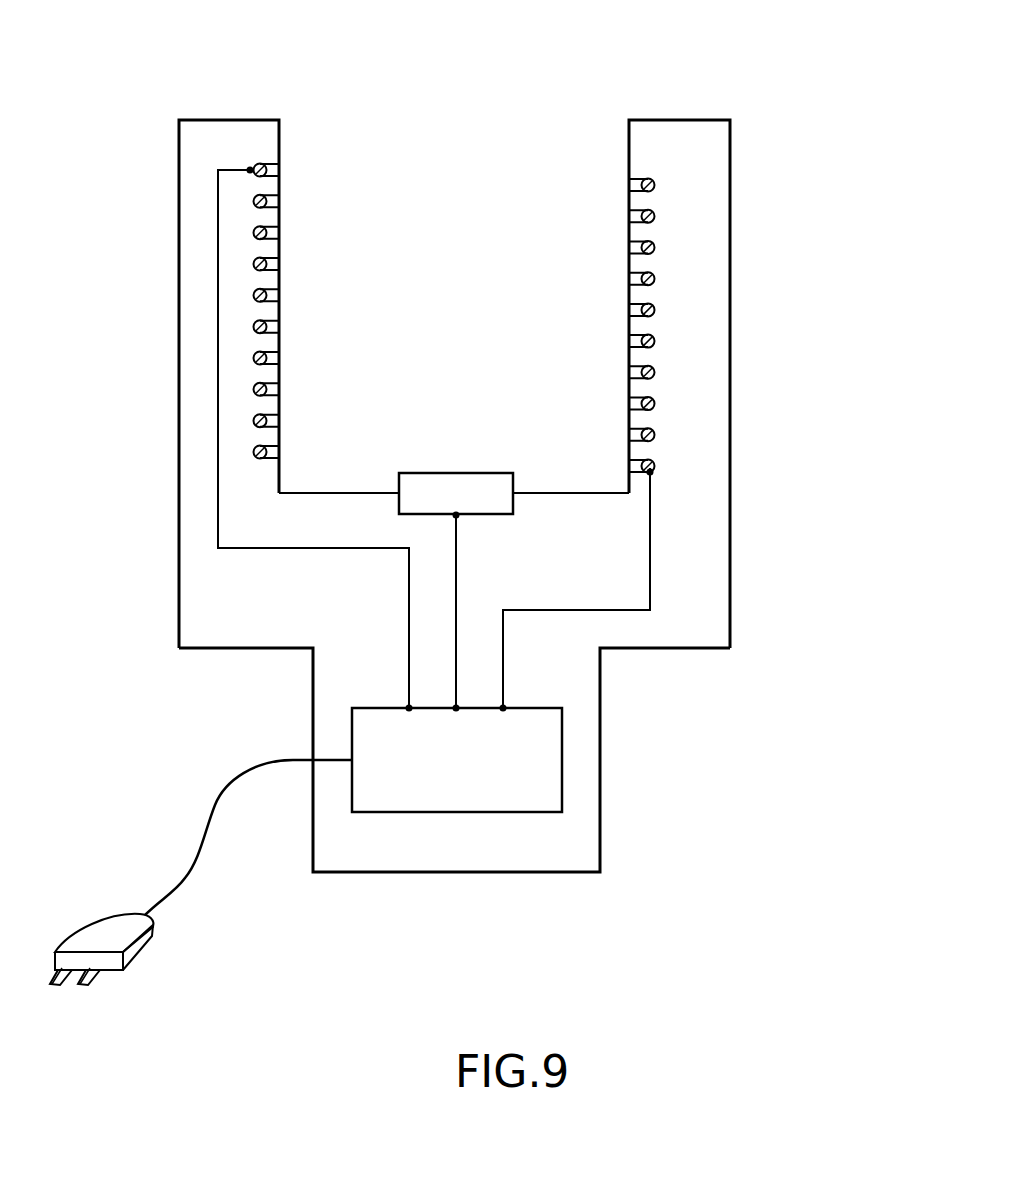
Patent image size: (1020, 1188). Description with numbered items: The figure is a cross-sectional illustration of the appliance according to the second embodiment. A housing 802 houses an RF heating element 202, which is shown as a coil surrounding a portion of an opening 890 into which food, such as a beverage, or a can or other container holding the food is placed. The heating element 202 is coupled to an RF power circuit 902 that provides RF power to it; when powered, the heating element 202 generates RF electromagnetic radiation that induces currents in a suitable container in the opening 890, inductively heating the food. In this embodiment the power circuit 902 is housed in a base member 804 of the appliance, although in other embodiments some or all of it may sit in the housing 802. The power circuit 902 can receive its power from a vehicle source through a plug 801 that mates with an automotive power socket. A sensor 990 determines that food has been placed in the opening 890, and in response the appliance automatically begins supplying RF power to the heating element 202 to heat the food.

The opening 890 is at (562, 136).
The RF heating element 202 is at (652, 183).
The housing 802 is at (730, 348).
The base member 804 is at (600, 755).
The sensor 990 is at (470, 514).
The RF power circuit 902 is at (472, 812).
The plug 801 is at (145, 957).